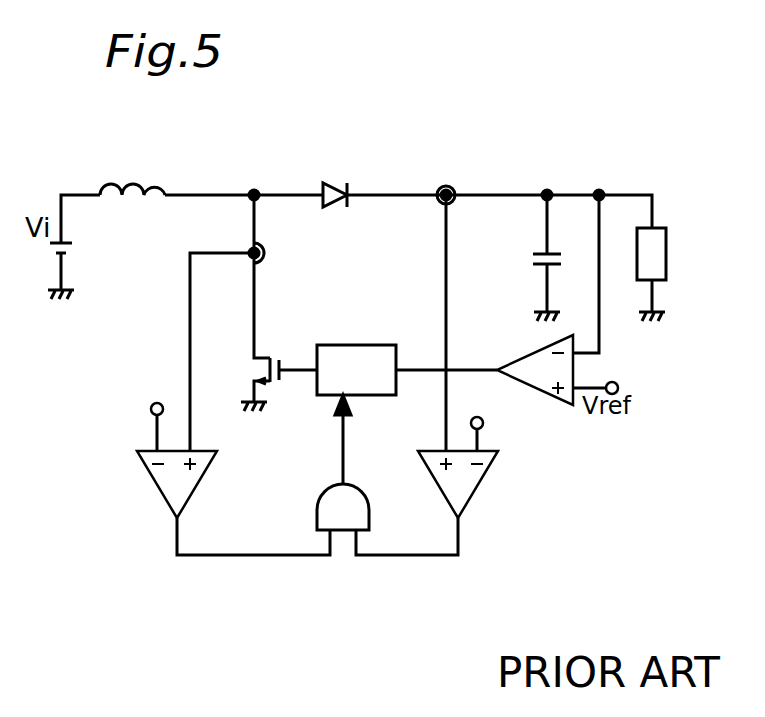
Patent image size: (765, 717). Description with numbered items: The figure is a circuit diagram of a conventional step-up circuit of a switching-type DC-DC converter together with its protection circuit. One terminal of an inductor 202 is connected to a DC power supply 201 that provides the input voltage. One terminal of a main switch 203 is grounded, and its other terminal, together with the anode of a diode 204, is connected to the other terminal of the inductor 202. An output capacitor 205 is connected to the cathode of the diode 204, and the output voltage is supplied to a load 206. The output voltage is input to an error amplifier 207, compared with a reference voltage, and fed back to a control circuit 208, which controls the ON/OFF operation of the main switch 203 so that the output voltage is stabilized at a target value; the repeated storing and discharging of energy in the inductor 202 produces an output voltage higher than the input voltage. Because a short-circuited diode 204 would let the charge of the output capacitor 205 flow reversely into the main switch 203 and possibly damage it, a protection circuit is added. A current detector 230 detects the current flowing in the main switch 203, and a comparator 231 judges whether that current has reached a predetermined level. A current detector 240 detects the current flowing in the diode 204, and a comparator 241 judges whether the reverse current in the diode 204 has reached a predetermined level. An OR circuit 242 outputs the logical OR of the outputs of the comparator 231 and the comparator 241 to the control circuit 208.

The DC power supply 201 is at (68, 255).
The inductor 202 is at (148, 183).
The main switch 203 is at (280, 358).
The diode 204 is at (343, 185).
The output capacitor 205 is at (534, 262).
The load 206 is at (652, 282).
The error amplifier 207 is at (542, 400).
The control circuit 208 is at (350, 345).
The current detector 230 is at (268, 265).
The comparator 231 is at (152, 480).
The current detector 240 is at (463, 185).
The comparator 241 is at (475, 500).
The OR circuit 242 is at (318, 512).